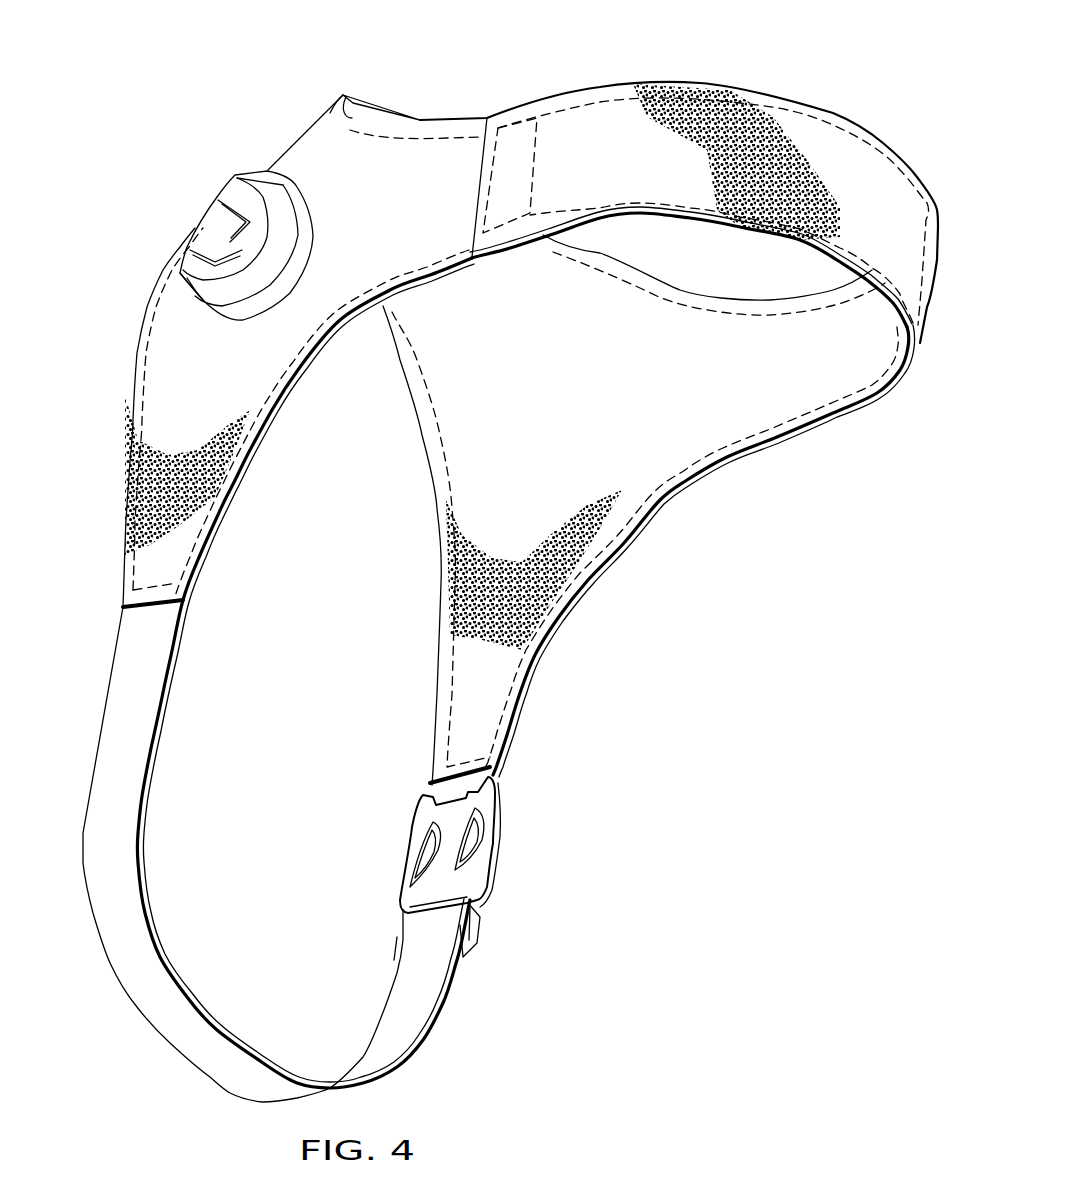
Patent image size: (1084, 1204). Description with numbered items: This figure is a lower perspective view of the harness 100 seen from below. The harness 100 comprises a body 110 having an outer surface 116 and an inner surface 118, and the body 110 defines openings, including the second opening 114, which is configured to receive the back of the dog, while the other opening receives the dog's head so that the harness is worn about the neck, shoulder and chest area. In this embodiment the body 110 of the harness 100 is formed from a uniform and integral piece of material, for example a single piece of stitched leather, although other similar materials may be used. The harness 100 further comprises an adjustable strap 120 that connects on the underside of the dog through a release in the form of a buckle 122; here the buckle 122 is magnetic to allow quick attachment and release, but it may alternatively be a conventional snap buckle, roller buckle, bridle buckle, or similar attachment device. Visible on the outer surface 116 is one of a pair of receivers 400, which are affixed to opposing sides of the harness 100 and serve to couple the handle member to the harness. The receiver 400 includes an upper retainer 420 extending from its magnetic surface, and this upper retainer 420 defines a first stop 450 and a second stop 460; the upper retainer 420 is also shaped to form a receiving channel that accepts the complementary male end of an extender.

The harness 100 is at (852, 116).
The body 110 is at (348, 153).
The second opening 114 is at (418, 683).
The outer surface 116 is at (404, 220).
The inner surface 118 is at (605, 446).
The adjustable strap 120 is at (430, 980).
The buckle 122 is at (497, 840).
The receiver 400 is at (199, 273).
The upper retainer 420 is at (250, 288).
The first stop 450 is at (257, 177).
The second stop 460 is at (190, 292).